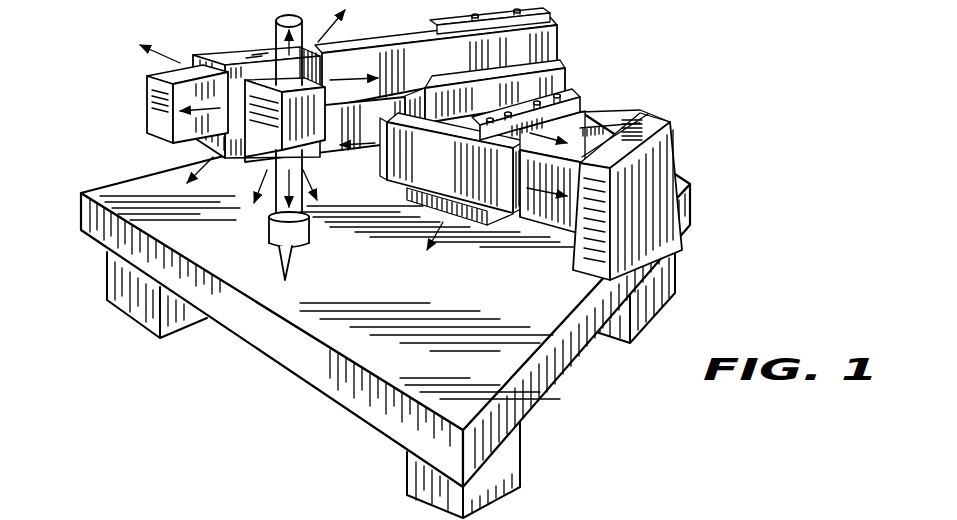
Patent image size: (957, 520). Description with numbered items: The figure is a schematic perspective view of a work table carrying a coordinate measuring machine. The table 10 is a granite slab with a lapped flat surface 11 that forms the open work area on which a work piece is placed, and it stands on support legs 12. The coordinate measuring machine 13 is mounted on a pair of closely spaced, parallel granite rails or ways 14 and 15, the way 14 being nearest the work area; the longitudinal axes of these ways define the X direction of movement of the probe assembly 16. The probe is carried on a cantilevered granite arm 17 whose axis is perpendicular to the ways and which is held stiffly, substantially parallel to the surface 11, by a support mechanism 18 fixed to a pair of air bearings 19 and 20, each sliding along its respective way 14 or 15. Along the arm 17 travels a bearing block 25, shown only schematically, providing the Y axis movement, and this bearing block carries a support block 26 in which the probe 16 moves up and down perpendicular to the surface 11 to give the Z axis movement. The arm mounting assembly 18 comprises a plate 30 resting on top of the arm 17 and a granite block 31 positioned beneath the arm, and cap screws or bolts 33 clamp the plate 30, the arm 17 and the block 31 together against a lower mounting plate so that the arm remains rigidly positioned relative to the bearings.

The table 10 is at (411, 297).
The flat surface 11 is at (490, 377).
The support legs 12 is at (660, 273).
The coordinate measuring machine 13 is at (561, 174).
The way 14 is at (565, 212).
The way 15 is at (627, 117).
The probe assembly 16 is at (307, 263).
The cantilevered granite arm 17 is at (150, 97).
The support mechanism 18 is at (476, 66).
The air bearing 19 is at (487, 195).
The air bearing 20 is at (603, 113).
The bearing block 25 is at (252, 50).
The support block 26 is at (274, 135).
The plate 30 is at (433, 27).
The granite block 31 is at (453, 107).
The cap screws or bolts 33 is at (473, 15).